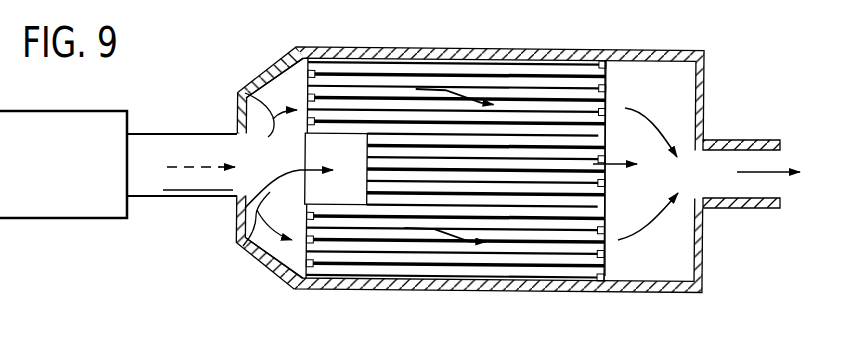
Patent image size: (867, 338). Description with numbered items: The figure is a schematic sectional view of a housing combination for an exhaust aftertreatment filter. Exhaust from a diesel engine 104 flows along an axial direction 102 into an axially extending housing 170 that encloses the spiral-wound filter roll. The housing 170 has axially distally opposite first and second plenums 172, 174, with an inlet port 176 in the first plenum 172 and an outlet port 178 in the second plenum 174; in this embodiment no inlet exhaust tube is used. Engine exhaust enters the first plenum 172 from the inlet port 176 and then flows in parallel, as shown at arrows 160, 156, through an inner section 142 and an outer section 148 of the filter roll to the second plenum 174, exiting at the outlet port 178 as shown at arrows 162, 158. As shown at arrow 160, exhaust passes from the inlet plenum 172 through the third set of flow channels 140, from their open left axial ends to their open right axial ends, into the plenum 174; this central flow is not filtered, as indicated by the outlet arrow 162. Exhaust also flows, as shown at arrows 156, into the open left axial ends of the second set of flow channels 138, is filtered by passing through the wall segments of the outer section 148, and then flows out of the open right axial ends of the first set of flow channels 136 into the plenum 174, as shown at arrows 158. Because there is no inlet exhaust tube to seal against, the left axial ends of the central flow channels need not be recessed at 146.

The axial direction 102 is at (199, 165).
The diesel engine 104 is at (58, 218).
The first set of flow channels 136 is at (328, 262).
The second set of flow channels 138 is at (377, 249).
The third set of flow channels 140 is at (593, 153).
The inner section 142 is at (367, 180).
The recess 146 is at (366, 157).
The outer section 148 is at (240, 237).
The arrows 156 is at (252, 94).
The arrows 158 is at (650, 125).
The arrow 160 is at (241, 211).
The arrow 162 is at (612, 170).
The housing 170 is at (508, 53).
The first plenum 172 is at (268, 74).
The second plenum 174 is at (665, 64).
The inlet port 176 is at (216, 133).
The outlet port 178 is at (712, 140).